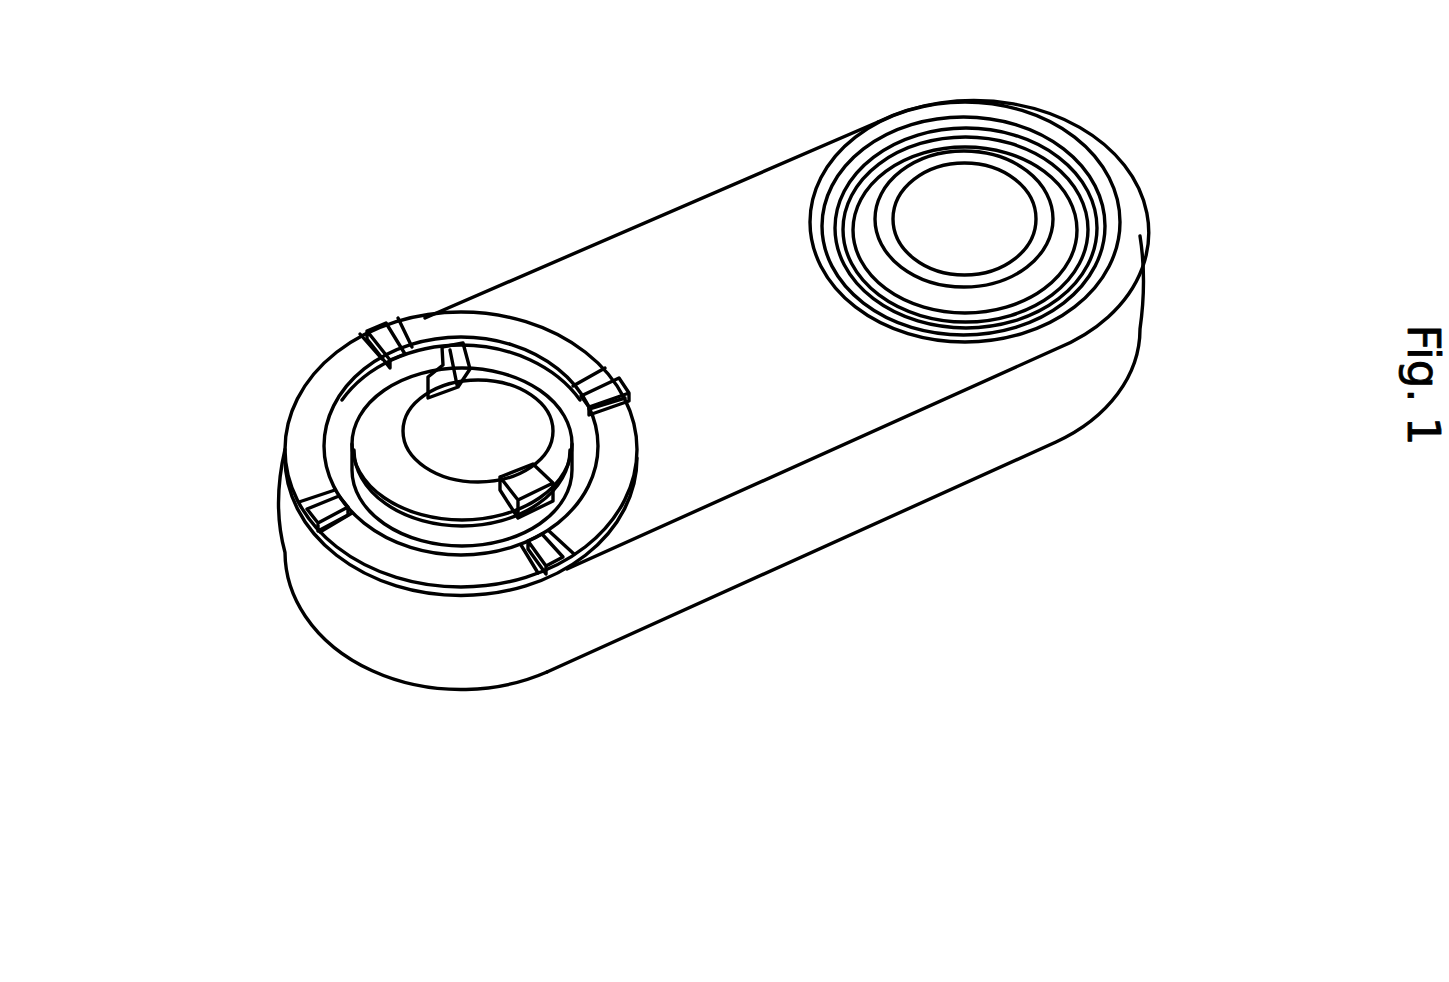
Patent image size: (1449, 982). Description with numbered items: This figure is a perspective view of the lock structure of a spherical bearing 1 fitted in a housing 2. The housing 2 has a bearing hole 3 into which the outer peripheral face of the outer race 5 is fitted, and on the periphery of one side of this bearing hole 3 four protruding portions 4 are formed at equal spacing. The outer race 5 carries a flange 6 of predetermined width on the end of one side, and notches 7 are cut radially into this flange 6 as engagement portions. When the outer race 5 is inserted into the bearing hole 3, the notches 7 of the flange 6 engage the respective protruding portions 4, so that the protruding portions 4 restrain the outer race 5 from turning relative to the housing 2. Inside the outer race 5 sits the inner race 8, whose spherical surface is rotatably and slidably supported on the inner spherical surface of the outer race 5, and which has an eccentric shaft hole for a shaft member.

The spherical bearing 1 is at (548, 300).
The housing 2 is at (686, 192).
The bearing hole 3 is at (513, 385).
The protruding portions 4 is at (606, 367).
The outer race 5 is at (656, 462).
The flange 6 is at (421, 570).
The notches 7 is at (355, 317).
The inner race 8 is at (387, 407).